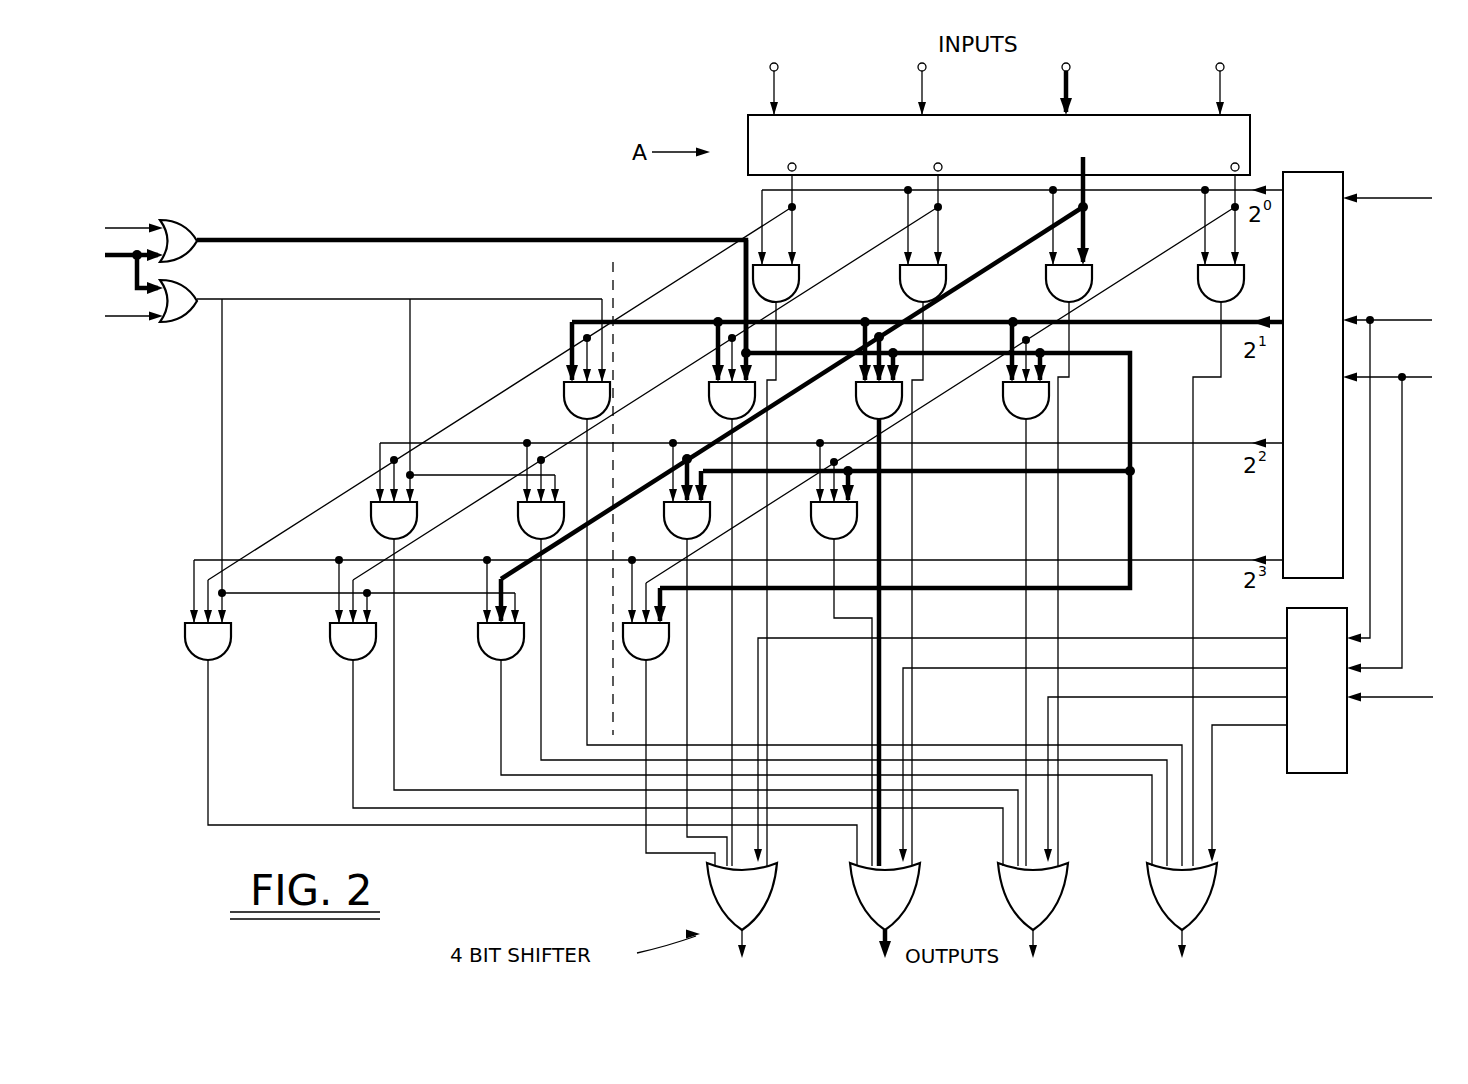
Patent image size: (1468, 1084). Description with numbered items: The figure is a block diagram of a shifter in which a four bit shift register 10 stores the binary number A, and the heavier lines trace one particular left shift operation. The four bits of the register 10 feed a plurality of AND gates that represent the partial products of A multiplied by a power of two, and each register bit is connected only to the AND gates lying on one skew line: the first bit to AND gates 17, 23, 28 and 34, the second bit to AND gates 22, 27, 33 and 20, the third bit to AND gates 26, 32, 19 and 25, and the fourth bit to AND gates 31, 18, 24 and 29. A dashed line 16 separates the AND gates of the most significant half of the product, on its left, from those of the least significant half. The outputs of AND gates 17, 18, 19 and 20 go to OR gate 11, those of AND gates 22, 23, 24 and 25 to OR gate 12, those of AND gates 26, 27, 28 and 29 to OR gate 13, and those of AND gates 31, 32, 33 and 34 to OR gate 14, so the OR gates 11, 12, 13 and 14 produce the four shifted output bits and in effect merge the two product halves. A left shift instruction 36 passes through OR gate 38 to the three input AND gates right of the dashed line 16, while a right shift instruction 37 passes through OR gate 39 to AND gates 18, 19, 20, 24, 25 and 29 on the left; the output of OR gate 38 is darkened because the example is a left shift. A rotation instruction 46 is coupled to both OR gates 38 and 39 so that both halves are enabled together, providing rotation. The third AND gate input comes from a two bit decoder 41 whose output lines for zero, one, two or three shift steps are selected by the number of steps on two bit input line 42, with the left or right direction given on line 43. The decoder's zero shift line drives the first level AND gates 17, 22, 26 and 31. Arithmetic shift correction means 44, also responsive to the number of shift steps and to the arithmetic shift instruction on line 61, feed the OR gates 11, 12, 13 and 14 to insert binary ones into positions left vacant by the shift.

The shift register 10 is at (766, 116).
The OR gate 11 is at (1215, 912).
The OR gate 12 is at (1052, 912).
The OR gate 13 is at (903, 912).
The OR gate 14 is at (757, 912).
The dashed line 16 is at (612, 270).
The AND gate 17 is at (1236, 276).
The AND gate 18 is at (567, 404).
The AND gate 19 is at (536, 523).
The AND gate 20 is at (498, 638).
The AND gate 22 is at (1086, 278).
The AND gate 23 is at (1020, 404).
The AND gate 24 is at (386, 522).
The AND gate 25 is at (344, 638).
The AND gate 26 is at (940, 276).
The AND gate 27 is at (869, 403).
The AND gate 28 is at (832, 523).
The AND gate 29 is at (203, 645).
The AND gate 31 is at (790, 276).
The AND gate 32 is at (720, 404).
The AND gate 33 is at (686, 523).
The AND gate 34 is at (652, 650).
The left shift instruction 36 is at (150, 200).
The right shift instruction 37 is at (151, 343).
The OR gate 38 is at (192, 236).
The OR gate 39 is at (192, 303).
The two bit decoder 41 is at (1296, 172).
The two bit input line 42 is at (1384, 322).
The left/right instruction line 43 is at (1416, 202).
The arithmetic shift correction means 44 is at (1306, 773).
The rotation instruction 46 is at (102, 266).
The arithmetic shift instruction line 61 is at (1380, 697).